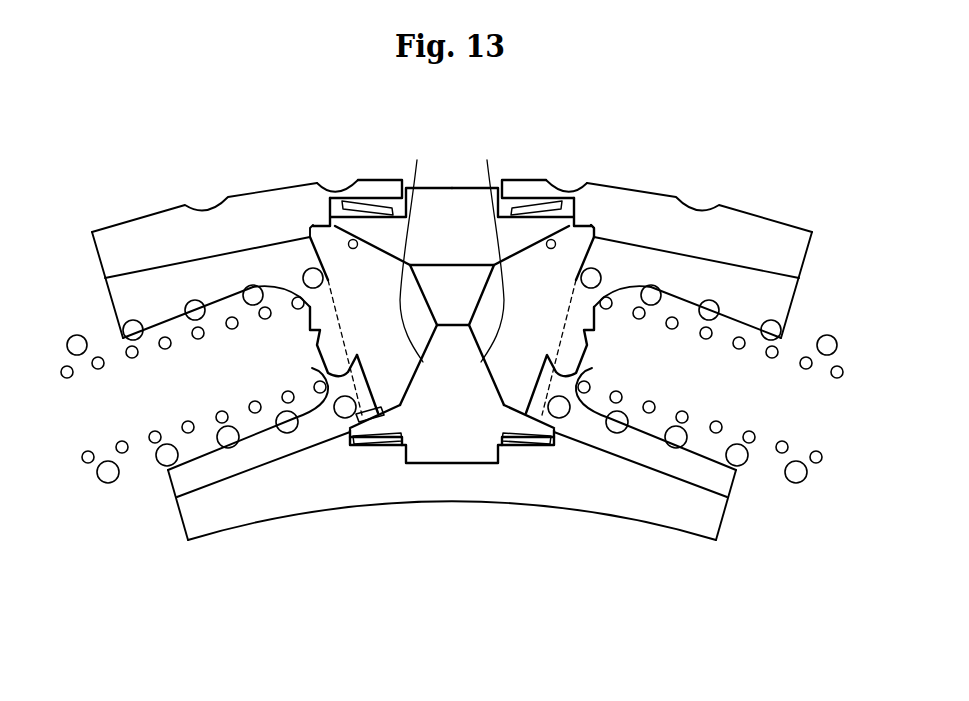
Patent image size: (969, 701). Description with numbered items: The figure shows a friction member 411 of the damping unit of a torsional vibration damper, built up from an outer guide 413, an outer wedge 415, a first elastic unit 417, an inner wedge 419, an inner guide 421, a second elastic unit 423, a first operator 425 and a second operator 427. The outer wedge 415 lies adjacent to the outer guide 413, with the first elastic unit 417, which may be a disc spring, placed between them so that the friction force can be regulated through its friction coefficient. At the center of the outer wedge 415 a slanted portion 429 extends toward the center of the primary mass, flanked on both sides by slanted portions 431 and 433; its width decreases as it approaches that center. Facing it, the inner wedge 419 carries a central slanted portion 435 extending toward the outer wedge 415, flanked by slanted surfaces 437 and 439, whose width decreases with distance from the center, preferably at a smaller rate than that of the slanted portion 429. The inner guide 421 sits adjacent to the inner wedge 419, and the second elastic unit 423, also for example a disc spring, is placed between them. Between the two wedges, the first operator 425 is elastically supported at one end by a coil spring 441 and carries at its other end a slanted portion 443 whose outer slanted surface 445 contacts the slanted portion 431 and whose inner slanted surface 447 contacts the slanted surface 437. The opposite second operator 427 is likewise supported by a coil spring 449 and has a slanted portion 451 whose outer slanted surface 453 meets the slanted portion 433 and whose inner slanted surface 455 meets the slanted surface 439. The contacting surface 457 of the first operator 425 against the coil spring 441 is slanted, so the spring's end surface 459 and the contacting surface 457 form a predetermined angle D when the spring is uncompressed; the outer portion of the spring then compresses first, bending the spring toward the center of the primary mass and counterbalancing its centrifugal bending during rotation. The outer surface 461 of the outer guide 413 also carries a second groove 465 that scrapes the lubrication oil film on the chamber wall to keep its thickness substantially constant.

The friction member 411 is at (778, 175).
The outer guide 413 is at (632, 191).
The outer wedge 415 is at (446, 193).
The first elastic unit 417 is at (377, 247).
The inner wedge 419 is at (455, 462).
The inner guide 421 is at (282, 516).
The second elastic unit 423 is at (368, 447).
The first operator 425 is at (316, 236).
The second operator 427 is at (579, 242).
The slanted portion 429 is at (436, 261).
The slanted portion 431 is at (380, 248).
The slanted portion 433 is at (524, 248).
The slanted portion 435 is at (436, 370).
The slanted surface 437 is at (402, 450).
The slanted surface 439 is at (497, 466).
The coil spring 441 is at (108, 484).
The slanted portion 443 is at (385, 328).
The outer slanted surface 445 is at (348, 239).
The inner slanted surface 447 is at (418, 249).
The coil spring 449 is at (799, 483).
The slanted portion 451 is at (545, 328).
The outer slanted surface 453 is at (556, 239).
The inner slanted surface 455 is at (487, 249).
The contacting surface 457 is at (388, 448).
The end surface 459 is at (315, 370).
The outer surface 461 is at (793, 228).
The second groove 465 is at (333, 192).
The predetermined angle D is at (377, 450).